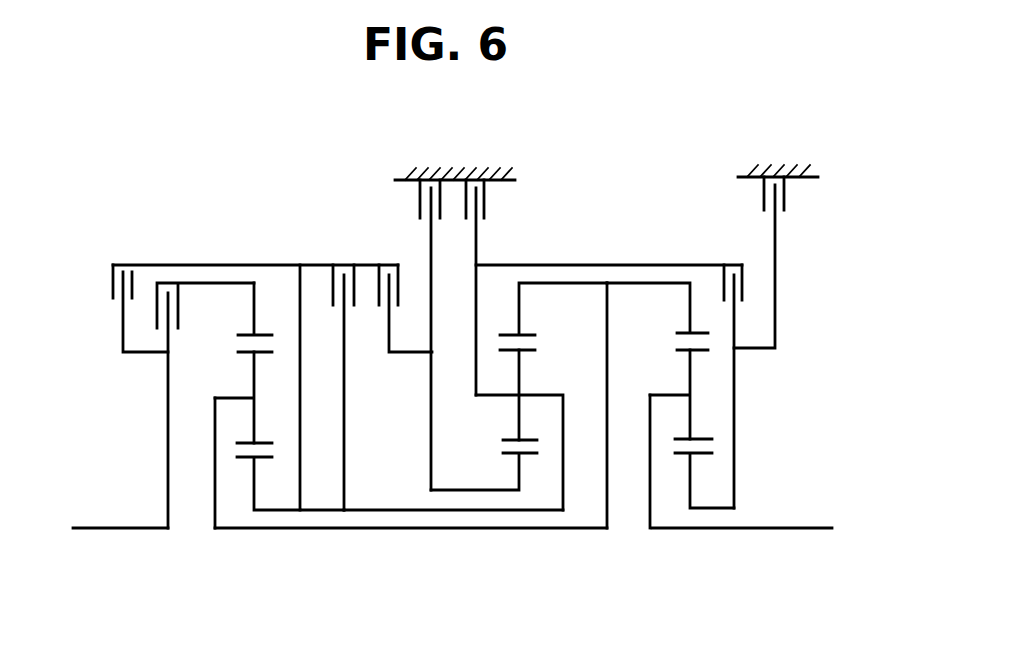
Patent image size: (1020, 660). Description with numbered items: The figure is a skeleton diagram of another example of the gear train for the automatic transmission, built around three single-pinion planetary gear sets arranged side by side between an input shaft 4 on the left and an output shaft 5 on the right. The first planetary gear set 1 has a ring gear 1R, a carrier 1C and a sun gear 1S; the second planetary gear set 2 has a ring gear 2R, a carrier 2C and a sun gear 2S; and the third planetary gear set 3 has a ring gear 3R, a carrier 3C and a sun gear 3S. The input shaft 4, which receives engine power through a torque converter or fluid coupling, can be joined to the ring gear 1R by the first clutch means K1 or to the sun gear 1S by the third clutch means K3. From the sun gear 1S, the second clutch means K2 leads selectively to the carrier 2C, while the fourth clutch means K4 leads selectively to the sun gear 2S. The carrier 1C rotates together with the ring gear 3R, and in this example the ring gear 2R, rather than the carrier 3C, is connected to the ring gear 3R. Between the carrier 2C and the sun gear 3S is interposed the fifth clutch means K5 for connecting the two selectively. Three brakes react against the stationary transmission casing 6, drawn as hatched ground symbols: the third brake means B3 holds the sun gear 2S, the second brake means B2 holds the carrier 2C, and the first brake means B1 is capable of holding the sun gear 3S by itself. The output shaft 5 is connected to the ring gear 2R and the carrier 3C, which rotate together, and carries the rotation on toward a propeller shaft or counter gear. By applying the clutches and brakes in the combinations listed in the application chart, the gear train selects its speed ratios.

The first planetary gear set 1 is at (242, 511).
The second planetary gear set 2 is at (494, 500).
The third planetary gear set 3 is at (674, 513).
The input shaft 4 is at (135, 528).
The output shaft 5 is at (779, 528).
The transmission casing 6 is at (513, 172).
The first clutch means K1 is at (205, 405).
The second clutch means K2 is at (345, 372).
The third clutch means K3 is at (138, 293).
The fourth clutch means K4 is at (404, 293).
The fifth clutch means K5 is at (731, 370).
The first brake means B1 is at (764, 239).
The second brake means B2 is at (480, 264).
The third brake means B3 is at (421, 312).
The ring gear of the first planetary gear set 1R is at (256, 340).
The carrier of the first planetary gear set 1C is at (244, 398).
The sun gear of the first planetary gear set 1S is at (257, 457).
The ring gear of the second planetary gear set 2R is at (524, 335).
The carrier of the second planetary gear set 2C is at (536, 395).
The sun gear of the second planetary gear set 2S is at (517, 457).
The ring gear of the third planetary gear set 3R is at (687, 333).
The carrier of the third planetary gear set 3C is at (686, 395).
The sun gear of the third planetary gear set 3S is at (695, 455).